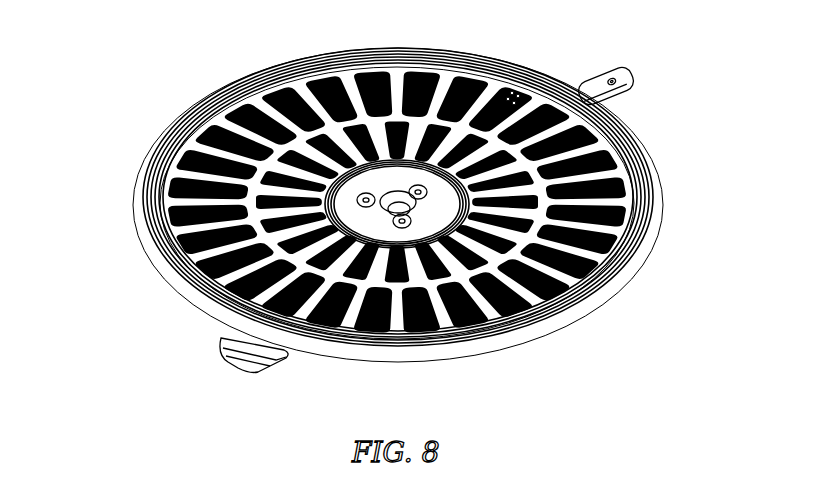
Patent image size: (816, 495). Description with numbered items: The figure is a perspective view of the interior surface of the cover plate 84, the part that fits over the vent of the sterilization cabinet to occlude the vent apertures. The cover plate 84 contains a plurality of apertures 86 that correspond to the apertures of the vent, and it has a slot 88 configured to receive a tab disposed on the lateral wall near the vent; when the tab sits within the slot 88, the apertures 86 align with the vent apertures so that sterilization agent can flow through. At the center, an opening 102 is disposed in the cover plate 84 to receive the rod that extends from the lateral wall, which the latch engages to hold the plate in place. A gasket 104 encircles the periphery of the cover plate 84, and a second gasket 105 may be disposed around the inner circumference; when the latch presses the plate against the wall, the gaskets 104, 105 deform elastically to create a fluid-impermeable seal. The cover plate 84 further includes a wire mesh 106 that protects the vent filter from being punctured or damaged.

The cover plate 84 is at (137, 59).
The apertures 86 is at (341, 84).
The slot 88 is at (615, 82).
The opening 102 is at (402, 202).
The gasket 104 is at (641, 157).
The second gasket 105 is at (540, 226).
The wire mesh 106 is at (527, 88).